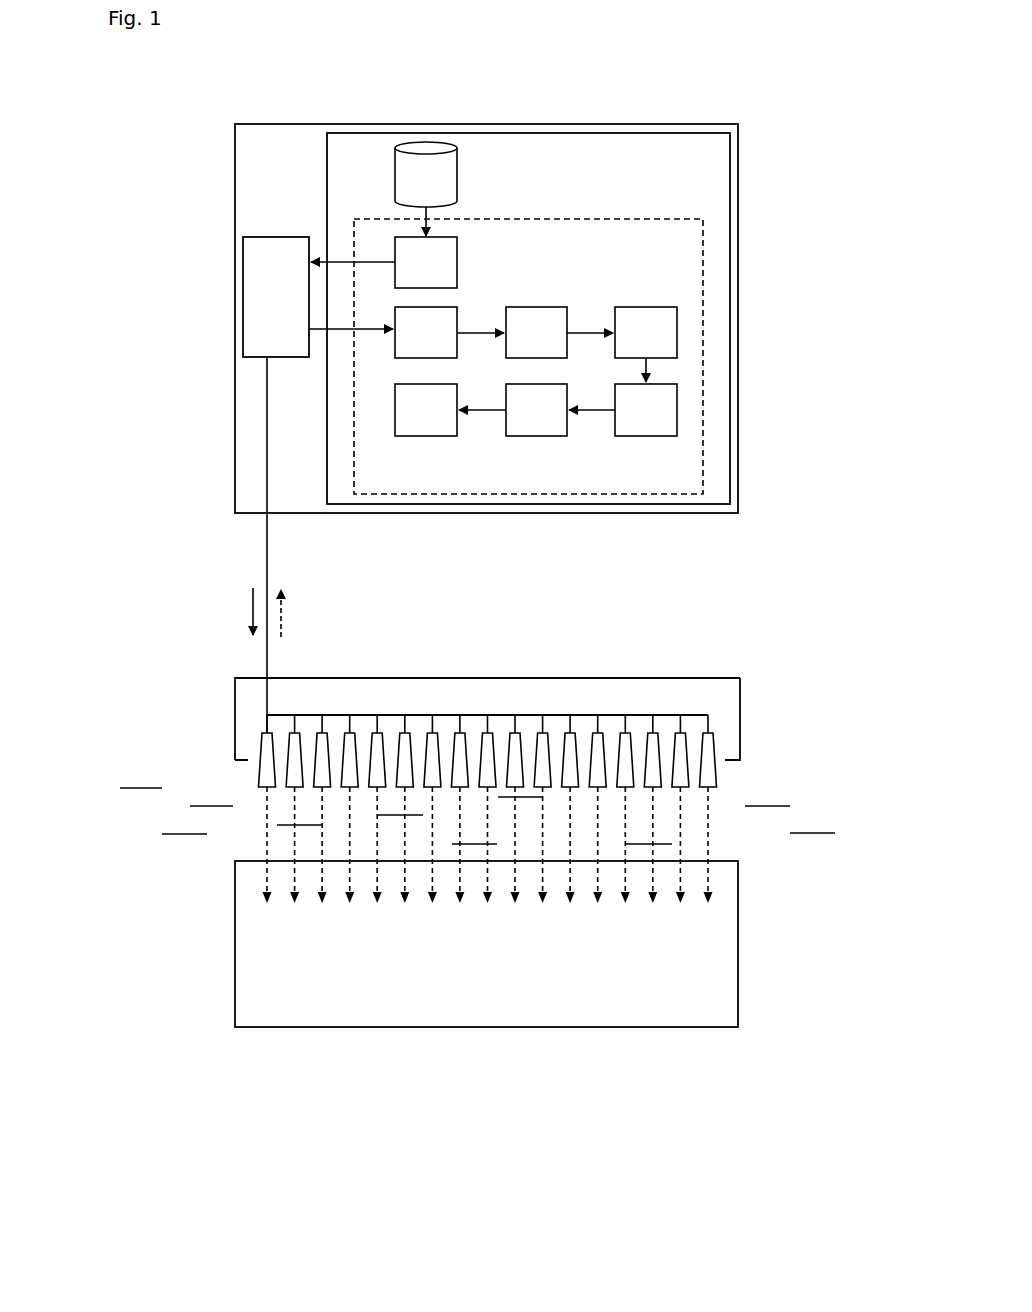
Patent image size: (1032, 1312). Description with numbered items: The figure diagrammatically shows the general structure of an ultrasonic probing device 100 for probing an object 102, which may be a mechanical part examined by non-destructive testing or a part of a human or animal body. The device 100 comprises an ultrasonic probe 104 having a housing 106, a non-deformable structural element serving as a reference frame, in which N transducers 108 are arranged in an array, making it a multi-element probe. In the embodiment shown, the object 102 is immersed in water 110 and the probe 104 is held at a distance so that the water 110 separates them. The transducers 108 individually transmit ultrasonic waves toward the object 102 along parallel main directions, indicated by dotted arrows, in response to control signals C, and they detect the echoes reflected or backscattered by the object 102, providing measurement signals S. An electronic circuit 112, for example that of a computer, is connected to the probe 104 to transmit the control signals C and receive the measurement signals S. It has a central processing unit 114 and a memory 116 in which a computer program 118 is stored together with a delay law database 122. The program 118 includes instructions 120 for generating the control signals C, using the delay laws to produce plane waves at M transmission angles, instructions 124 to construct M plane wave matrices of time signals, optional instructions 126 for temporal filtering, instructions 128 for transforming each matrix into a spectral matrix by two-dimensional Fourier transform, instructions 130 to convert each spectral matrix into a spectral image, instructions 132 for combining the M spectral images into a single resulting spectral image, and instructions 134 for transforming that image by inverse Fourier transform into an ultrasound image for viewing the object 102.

The probing device 100 is at (659, 97).
The object 102 is at (466, 961).
The ultrasonic probe 104 is at (561, 666).
The housing 106 is at (740, 710).
The transducers 108 is at (770, 765).
The water 110 is at (769, 847).
The electronic circuit 112 is at (259, 159).
The central processing unit 114 is at (258, 309).
The memory 116 is at (730, 198).
The computer program 118 is at (631, 486).
The instructions for generating control signals 120 is at (408, 274).
The delay law database 122 is at (408, 191).
The instructions to construct plane wave matrices 124 is at (408, 344).
The instructions to perform temporal filtering 126 is at (518, 344).
The instructions for transforming each plane wave matrix into a spectral matrix 128 is at (628, 344).
The instructions to convert each spectral matrix into a spectral image 130 is at (628, 421).
The instructions for combining the spectral images 132 is at (518, 421).
The instructions for transforming the resulting spectral image into an ultrasound im 134 is at (408, 421).